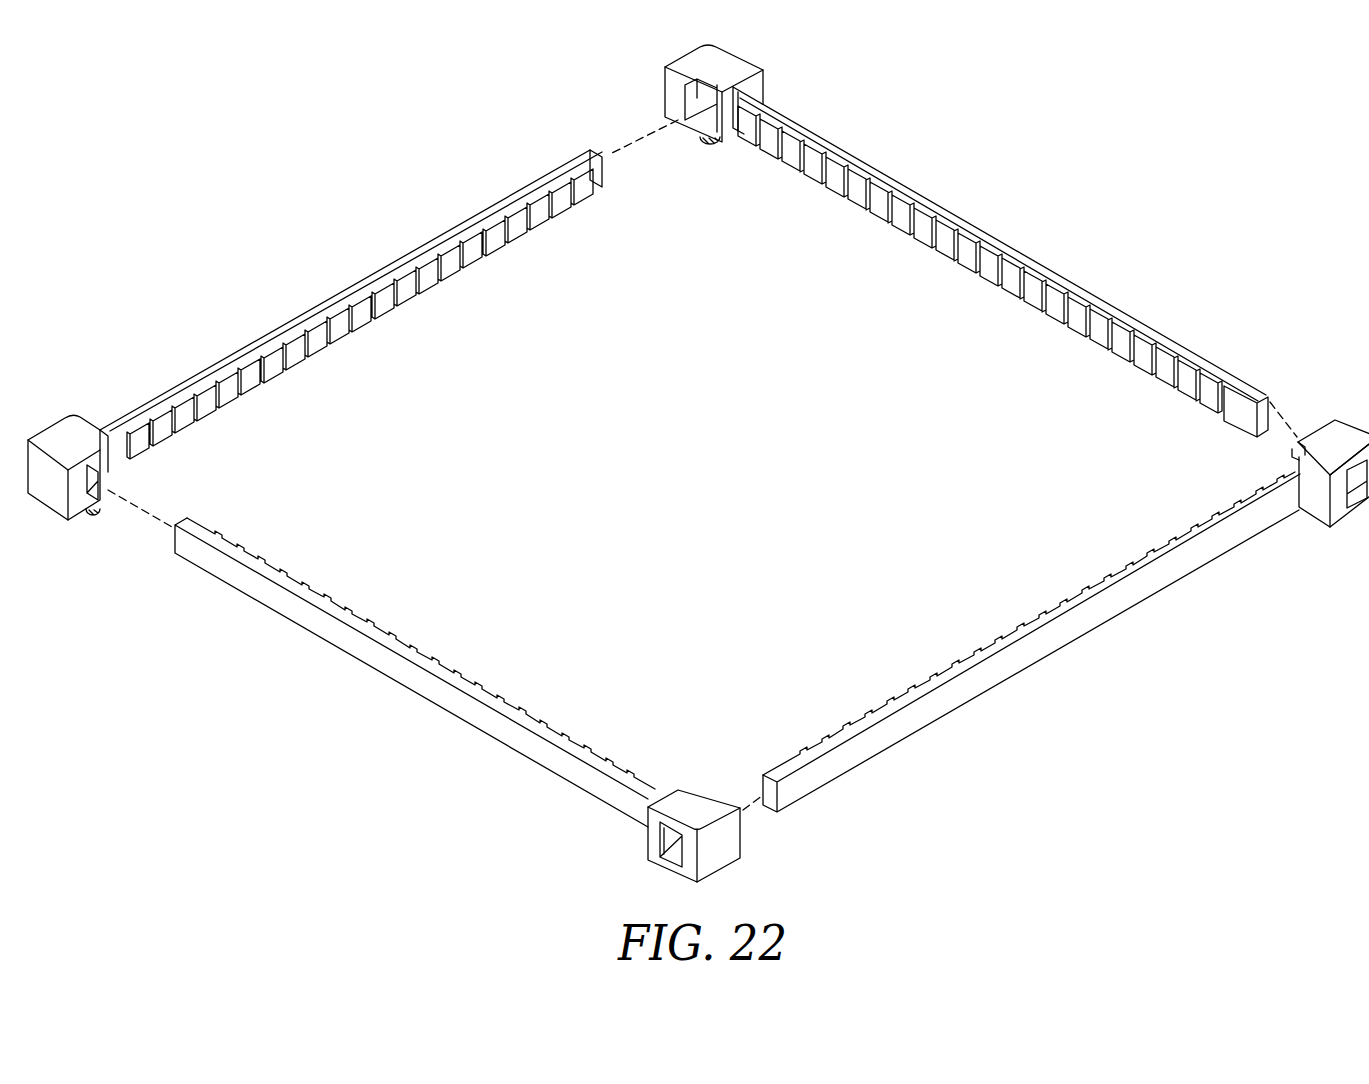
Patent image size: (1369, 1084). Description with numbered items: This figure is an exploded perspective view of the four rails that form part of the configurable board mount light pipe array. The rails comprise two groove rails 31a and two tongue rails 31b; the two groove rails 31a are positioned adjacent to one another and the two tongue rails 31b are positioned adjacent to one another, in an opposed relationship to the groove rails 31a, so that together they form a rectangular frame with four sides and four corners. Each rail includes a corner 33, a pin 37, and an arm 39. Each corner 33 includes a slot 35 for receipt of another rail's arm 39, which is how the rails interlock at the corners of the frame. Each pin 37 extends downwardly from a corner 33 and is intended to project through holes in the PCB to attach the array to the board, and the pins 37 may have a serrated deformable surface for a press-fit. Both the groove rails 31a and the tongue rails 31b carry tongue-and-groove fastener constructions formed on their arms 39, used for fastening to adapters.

The groove rail 31a is at (957, 193).
The tongue rail 31b is at (423, 195).
The corner 33 is at (733, 63).
The slot 35 is at (698, 125).
The pin 37 is at (712, 148).
The arm 39 is at (379, 279).